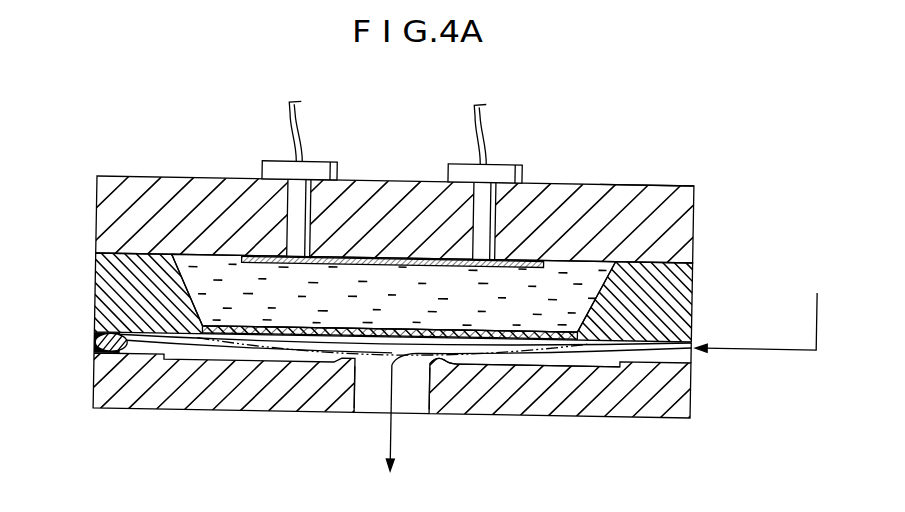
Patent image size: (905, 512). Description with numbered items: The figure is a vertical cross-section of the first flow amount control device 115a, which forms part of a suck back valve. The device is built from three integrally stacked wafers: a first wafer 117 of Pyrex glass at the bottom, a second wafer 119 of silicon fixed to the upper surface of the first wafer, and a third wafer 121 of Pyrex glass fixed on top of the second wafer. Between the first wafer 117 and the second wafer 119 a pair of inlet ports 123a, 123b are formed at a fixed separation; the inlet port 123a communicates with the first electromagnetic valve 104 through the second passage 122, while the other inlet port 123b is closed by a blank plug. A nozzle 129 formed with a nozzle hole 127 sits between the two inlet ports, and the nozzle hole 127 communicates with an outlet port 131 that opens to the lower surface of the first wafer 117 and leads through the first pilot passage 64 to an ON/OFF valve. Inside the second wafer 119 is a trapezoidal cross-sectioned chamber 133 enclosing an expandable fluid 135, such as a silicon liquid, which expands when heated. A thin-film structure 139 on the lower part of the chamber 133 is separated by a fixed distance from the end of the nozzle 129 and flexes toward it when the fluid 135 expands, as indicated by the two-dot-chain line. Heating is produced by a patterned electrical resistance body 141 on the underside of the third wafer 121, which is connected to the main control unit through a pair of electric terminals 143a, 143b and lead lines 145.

The first flow amount control device 115a is at (664, 175).
The first wafer 117 is at (637, 391).
The second wafer 119 is at (696, 288).
The third wafer 121 is at (696, 221).
The second passage 122 is at (821, 340).
The inlet port 123a is at (695, 348).
The inlet port 123b is at (103, 352).
The nozzle hole 127 is at (360, 359).
The nozzle 129 is at (463, 359).
The outlet port 131 is at (443, 358).
The chamber 133 is at (188, 287).
The expandable fluid 135 is at (565, 280).
The thin-film structure 139 is at (392, 326).
The electrical resistance pattern 141 is at (346, 251).
The electric terminal 143a is at (297, 212).
The electric terminal 143b is at (491, 225).
The lead lines 145 is at (300, 113).
The first pilot passage 64 is at (480, 497).
The first electromagnetic valve 104 is at (800, 290).